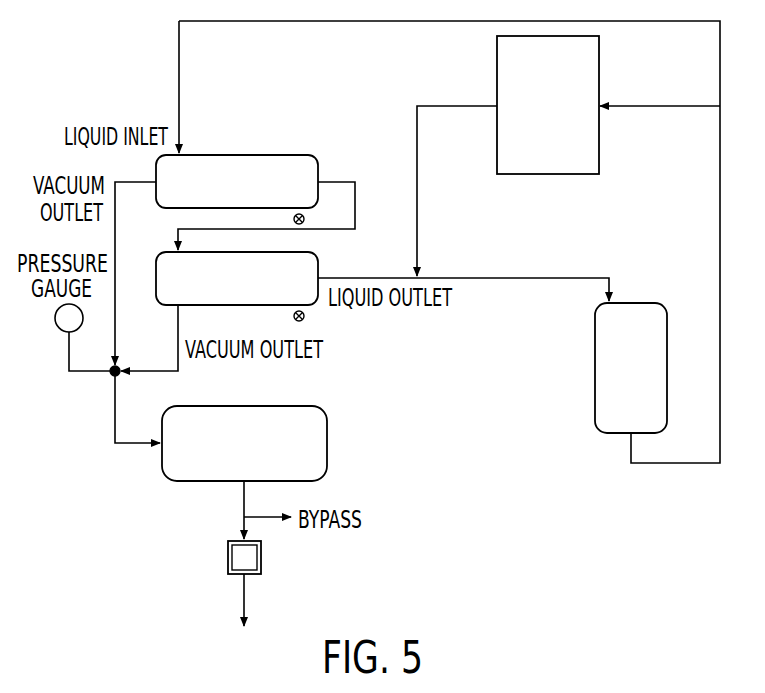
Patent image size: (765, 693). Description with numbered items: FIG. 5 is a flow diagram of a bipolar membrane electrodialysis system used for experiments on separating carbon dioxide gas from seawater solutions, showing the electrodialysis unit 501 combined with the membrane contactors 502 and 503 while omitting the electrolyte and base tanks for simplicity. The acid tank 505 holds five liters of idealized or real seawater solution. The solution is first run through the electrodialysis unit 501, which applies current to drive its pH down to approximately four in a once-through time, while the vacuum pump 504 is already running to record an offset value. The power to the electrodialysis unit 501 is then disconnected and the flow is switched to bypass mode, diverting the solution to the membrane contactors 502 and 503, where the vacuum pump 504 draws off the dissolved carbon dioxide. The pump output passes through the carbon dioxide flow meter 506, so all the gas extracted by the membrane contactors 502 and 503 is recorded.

The electrodialysis unit 501 is at (600, 71).
The membrane contactor 502 is at (318, 170).
The membrane contactor 503 is at (318, 270).
The vacuum pump 504 is at (327, 441).
The acid tank 505 is at (631, 302).
The CO2 flow meter 506 is at (228, 558).